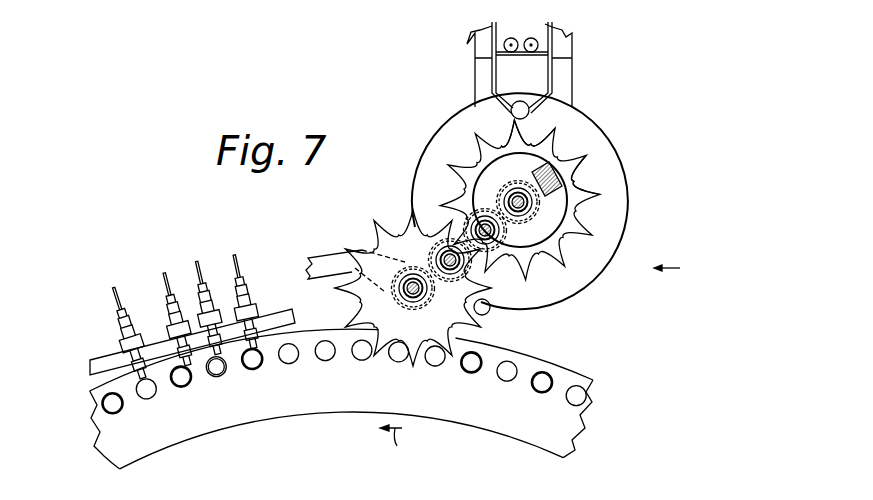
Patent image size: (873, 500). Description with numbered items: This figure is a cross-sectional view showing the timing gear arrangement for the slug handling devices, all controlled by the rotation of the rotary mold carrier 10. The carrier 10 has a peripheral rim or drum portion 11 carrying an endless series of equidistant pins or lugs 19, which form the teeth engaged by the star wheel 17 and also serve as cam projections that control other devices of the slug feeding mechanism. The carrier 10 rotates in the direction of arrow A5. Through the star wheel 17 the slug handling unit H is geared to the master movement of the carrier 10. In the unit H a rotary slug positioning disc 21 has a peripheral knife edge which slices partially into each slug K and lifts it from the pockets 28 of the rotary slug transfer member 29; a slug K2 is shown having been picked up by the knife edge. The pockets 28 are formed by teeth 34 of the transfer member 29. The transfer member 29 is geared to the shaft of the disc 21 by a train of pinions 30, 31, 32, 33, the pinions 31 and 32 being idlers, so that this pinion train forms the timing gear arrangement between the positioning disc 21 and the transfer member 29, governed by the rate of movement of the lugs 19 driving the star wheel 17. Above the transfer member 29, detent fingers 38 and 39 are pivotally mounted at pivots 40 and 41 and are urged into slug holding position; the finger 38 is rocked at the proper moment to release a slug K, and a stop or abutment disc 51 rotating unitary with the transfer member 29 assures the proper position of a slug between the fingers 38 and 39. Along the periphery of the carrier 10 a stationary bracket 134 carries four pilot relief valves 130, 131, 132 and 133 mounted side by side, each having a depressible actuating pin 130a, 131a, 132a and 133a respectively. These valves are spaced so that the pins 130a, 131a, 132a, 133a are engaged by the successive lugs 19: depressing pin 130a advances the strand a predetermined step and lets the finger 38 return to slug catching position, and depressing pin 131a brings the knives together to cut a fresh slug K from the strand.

The rotary mold carrier 10 is at (121, 6).
The peripheral rim or drum portion 11 is at (97, 448).
The star wheel 17 is at (401, 215).
The pins or lugs 19 is at (108, 405).
The disc 21 is at (455, 335).
The pockets 28 is at (525, 136).
The rotary slug transfer member 29 is at (577, 217).
The pinion 30 is at (417, 266).
The pinion 31 is at (452, 283).
The pinion 32 is at (490, 207).
The pinion 33 is at (530, 219).
The teeth 34 is at (600, 195).
The detent finger 38 is at (492, 68).
The detent finger 39 is at (552, 78).
The pivot 40 is at (513, 38).
The pivot 41 is at (532, 38).
The stop or abutment disc 51 is at (597, 141).
The pilot relief valve 130 is at (174, 322).
The pilot relief valve 131 is at (246, 302).
The pilot relief valve 132 is at (213, 301).
The pilot relief valve 133 is at (121, 343).
The stationary bracket 134 is at (103, 366).
The depressible actuating pin 130a is at (189, 385).
The depressible actuating pin 131a is at (263, 363).
The depressible actuating pin 132a is at (223, 376).
The depressible actuating pin 133a is at (145, 399).
The slug K is at (521, 101).
The slug K2 is at (489, 313).
The slug handling unit H is at (678, 277).
The arrow A5 is at (395, 446).